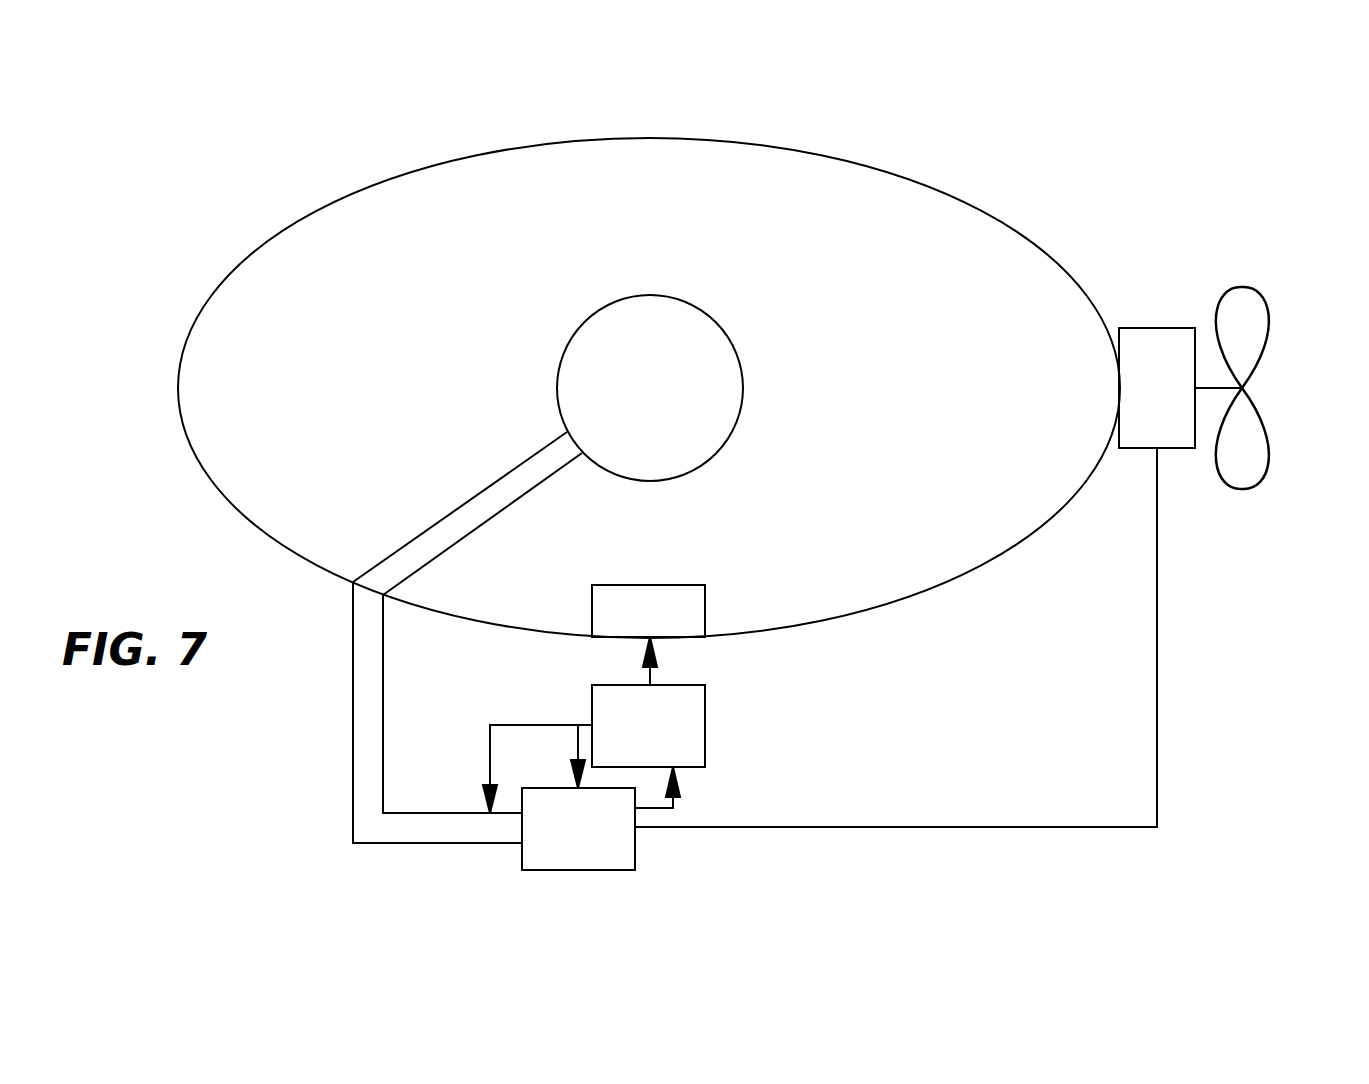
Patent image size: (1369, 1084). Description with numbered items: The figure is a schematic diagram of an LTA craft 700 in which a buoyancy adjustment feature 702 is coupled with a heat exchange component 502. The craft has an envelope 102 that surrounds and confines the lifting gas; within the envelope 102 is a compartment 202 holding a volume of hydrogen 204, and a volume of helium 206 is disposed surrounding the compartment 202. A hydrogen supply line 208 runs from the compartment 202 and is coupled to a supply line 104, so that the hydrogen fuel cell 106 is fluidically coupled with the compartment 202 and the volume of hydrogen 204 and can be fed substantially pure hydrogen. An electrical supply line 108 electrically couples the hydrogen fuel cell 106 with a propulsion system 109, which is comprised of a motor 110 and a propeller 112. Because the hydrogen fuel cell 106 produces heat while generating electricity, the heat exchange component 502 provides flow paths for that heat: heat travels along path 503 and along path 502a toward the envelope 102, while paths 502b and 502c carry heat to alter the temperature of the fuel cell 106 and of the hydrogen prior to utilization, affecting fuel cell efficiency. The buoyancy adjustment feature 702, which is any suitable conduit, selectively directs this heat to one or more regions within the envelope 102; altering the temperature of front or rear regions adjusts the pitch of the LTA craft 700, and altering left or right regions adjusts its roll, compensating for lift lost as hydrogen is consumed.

The LTA craft 700 is at (1135, 122).
The envelope 102 is at (363, 190).
The supply line 104 is at (353, 748).
The hydrogen fuel cell 106 is at (572, 870).
The electrical supply line 108 is at (962, 829).
The propulsion system 109 is at (1280, 408).
The motor 110 is at (1165, 328).
The propeller 112 is at (1278, 287).
The compartment 202 is at (557, 390).
The volume of hydrogen 204 is at (649, 389).
The volume of helium 206 is at (976, 279).
The hydrogen supply line 208 is at (480, 525).
The heat exchange component 502 is at (732, 808).
The path 502a is at (645, 678).
The path 502b is at (490, 745).
The path 502c is at (578, 745).
The path 503 is at (652, 808).
The buoyancy adjustment feature 702 is at (648, 611).